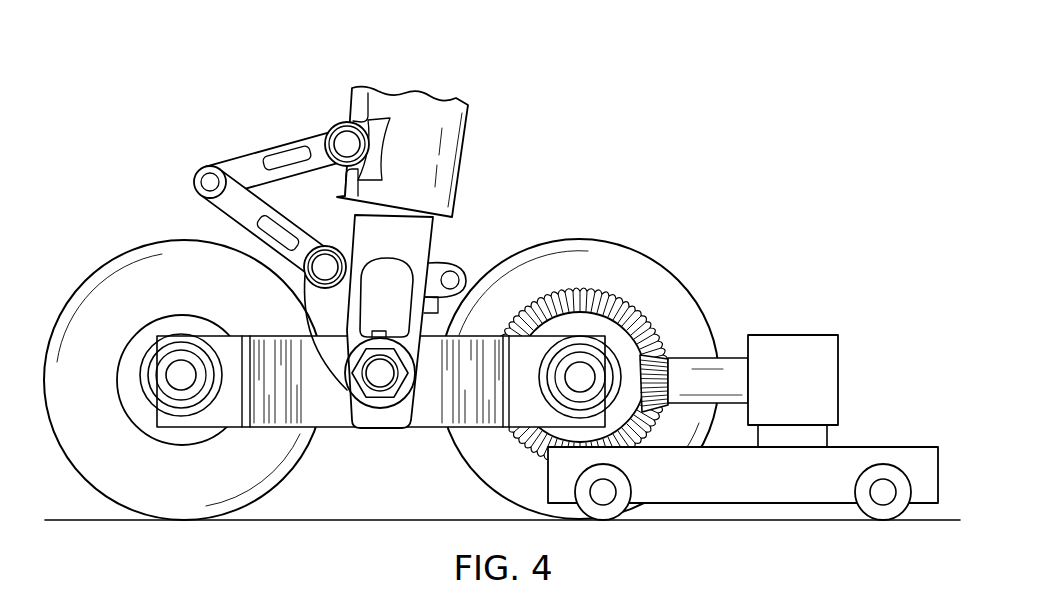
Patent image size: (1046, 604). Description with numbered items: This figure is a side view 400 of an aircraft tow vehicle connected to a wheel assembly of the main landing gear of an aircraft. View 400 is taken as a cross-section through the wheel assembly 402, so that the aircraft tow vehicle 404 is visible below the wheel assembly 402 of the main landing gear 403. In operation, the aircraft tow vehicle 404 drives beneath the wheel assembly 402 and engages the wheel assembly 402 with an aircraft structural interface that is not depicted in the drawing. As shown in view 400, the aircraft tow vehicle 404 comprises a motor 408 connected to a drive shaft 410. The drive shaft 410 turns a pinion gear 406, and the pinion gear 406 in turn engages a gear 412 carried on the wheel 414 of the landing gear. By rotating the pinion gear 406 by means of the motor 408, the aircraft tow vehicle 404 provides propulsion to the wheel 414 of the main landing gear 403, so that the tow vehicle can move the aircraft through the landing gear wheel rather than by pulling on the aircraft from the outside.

The view 400 is at (128, 58).
The wheel assembly 402 is at (500, 182).
The main landing gear 403 is at (250, 114).
The aircraft tow vehicle 404 is at (872, 416).
The pinion gear 406 is at (667, 408).
The motor 408 is at (792, 335).
The drive shaft 410 is at (720, 357).
The gear 412 is at (613, 297).
The wheel 414 is at (590, 238).